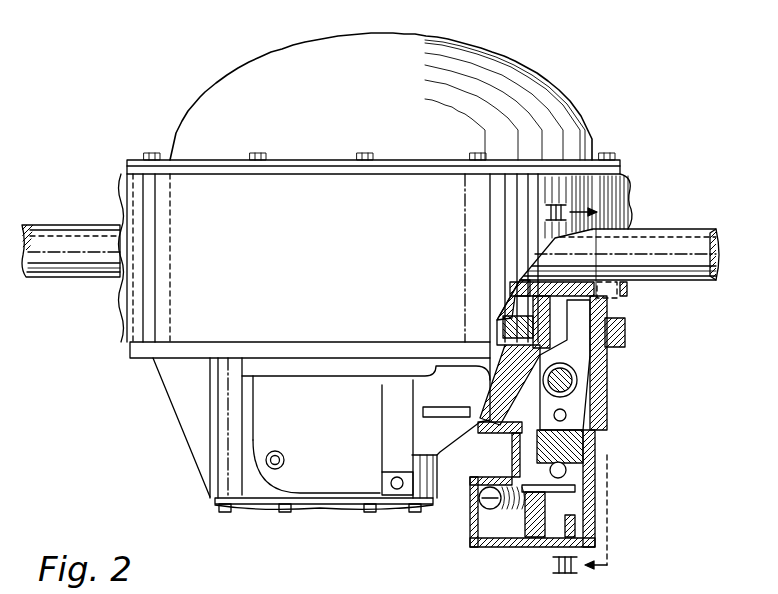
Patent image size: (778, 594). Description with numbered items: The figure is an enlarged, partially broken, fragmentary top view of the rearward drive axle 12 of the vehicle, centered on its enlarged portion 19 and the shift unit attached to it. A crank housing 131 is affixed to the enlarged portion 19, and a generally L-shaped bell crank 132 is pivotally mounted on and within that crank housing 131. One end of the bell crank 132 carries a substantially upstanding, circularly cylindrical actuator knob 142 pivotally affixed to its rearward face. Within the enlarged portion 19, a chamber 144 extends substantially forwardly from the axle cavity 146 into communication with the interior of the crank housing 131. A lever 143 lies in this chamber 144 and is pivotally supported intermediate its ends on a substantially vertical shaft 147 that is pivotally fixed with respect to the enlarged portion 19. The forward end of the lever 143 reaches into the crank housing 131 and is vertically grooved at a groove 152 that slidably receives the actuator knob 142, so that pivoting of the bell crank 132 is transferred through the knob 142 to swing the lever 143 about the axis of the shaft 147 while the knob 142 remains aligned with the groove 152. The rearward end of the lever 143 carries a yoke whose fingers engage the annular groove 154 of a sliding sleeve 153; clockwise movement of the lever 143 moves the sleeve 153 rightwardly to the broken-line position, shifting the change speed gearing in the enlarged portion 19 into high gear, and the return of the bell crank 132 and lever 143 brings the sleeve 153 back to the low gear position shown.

The axle 12 is at (670, 245).
The enlarged portion 19 is at (598, 191).
The crank housing 131 is at (588, 446).
The bell crank 132 is at (551, 493).
The actuator knob 142 is at (566, 482).
The lever 143 is at (580, 367).
The chamber 144 is at (585, 413).
The axle cavity 146 is at (626, 318).
The shaft 147 is at (572, 380).
The groove 152 is at (567, 470).
The sleeve 153 is at (520, 292).
The annular groove 154 is at (622, 300).